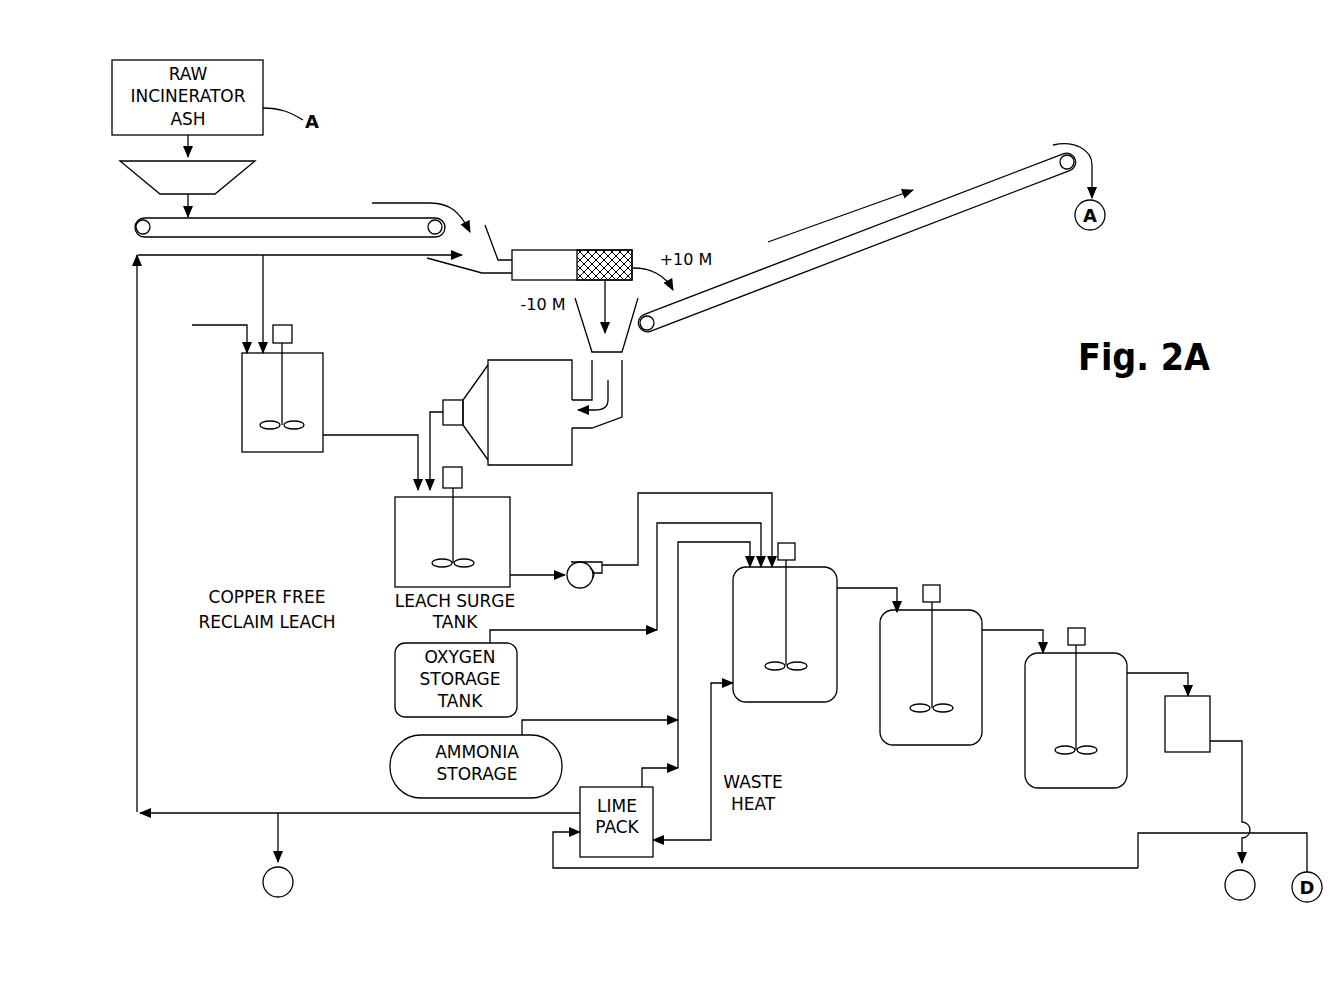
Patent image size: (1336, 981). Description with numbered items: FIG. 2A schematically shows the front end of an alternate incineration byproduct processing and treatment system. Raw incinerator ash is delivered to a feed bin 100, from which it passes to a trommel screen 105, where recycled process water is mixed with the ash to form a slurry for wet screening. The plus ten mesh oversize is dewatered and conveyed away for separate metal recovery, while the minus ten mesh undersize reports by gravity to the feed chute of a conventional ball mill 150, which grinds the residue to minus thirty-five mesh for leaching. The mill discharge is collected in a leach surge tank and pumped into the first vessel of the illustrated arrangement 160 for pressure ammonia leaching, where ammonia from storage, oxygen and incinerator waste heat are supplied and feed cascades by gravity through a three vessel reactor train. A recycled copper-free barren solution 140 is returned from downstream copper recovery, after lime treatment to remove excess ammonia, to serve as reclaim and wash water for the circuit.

The feed bin 100 is at (238, 182).
The trommel screen 105 is at (630, 250).
The ball mill 150 is at (527, 465).
The arrangement for pressure ammonia leaching 160 is at (773, 437).
The recycled copper-free (barren) solution 140 is at (278, 827).